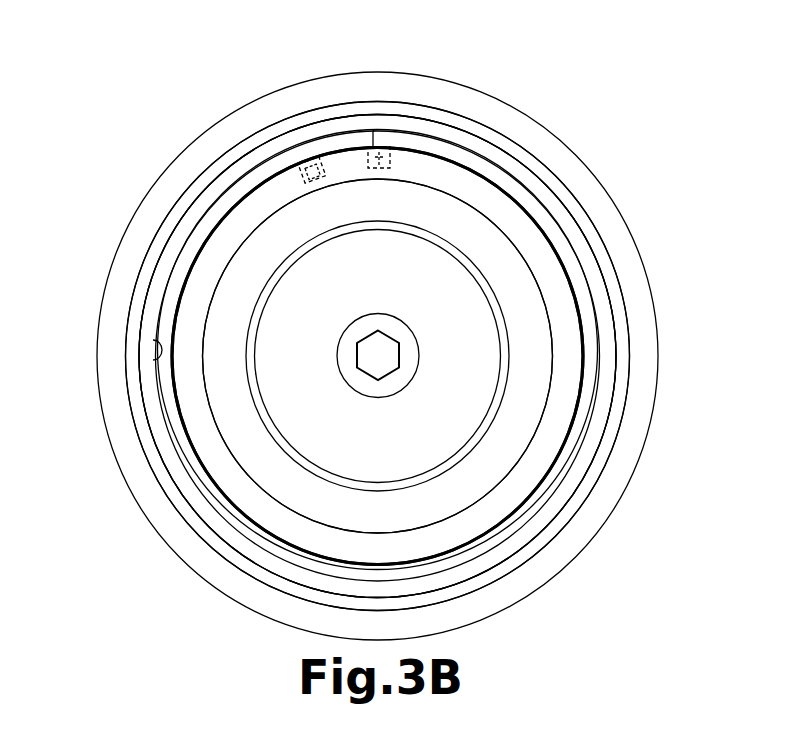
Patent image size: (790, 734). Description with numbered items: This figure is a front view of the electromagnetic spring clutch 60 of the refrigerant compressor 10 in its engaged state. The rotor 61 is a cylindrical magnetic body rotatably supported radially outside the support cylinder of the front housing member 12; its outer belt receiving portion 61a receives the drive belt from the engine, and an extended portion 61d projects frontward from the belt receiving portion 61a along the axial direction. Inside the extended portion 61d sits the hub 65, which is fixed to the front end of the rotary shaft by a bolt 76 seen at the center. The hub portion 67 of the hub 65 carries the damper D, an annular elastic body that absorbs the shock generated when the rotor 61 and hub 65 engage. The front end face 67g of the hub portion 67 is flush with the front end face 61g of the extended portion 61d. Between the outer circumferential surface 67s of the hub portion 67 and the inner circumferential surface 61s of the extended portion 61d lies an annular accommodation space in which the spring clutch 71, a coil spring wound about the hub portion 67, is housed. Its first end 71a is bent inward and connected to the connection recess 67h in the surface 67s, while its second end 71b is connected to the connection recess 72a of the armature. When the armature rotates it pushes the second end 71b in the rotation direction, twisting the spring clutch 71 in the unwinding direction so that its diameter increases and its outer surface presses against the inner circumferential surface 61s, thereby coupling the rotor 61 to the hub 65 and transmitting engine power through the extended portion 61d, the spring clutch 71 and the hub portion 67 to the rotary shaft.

The refrigerant compressor 10 is at (626, 157).
The front housing member 12 is at (659, 301).
The electromagnetic spring clutch 60 is at (207, 527).
The rotor 61 is at (537, 168).
The belt receiving portion 61a is at (630, 378).
The extended portion 61d is at (147, 420).
The front end face of the extended portion 61g is at (150, 382).
The inner circumferential surface of the extended portion 61s is at (152, 344).
The hub 65 is at (550, 448).
The hub portion 67 is at (213, 453).
The front end face of the hub portion 67g is at (540, 262).
The connection recess 67h is at (385, 170).
The outer circumferential surface of the hub portion 67s is at (187, 260).
The spring clutch 71 is at (560, 247).
The first end of the spring clutch 71a is at (368, 153).
The second end of the spring clutch 71b is at (322, 182).
The connection recess of the armature 72a is at (302, 182).
The bolt 76 is at (390, 357).
The damper D is at (545, 333).